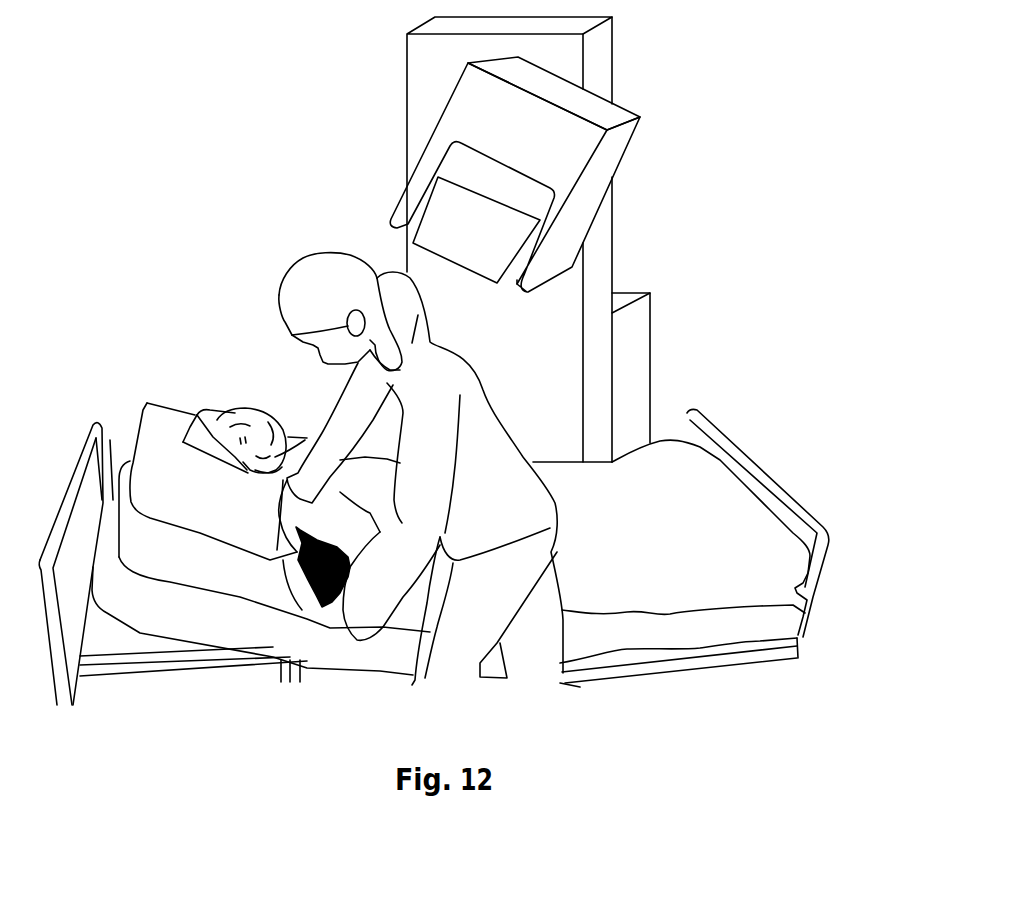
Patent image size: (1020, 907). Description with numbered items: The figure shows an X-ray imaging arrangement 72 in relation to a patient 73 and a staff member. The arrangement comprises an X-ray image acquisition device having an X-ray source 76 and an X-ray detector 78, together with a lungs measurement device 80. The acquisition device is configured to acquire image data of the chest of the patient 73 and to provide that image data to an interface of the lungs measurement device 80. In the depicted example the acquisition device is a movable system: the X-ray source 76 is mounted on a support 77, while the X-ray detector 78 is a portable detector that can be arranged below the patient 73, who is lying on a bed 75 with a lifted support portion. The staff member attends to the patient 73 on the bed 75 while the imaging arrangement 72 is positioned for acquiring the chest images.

The X-ray imaging arrangement 72 is at (256, 174).
The patient 73 is at (233, 390).
The bed 75 is at (158, 603).
The X-ray source 76 is at (305, 645).
The support 77 is at (603, 248).
The X-ray detector 78 is at (428, 241).
The lungs measurement device 80 is at (637, 355).